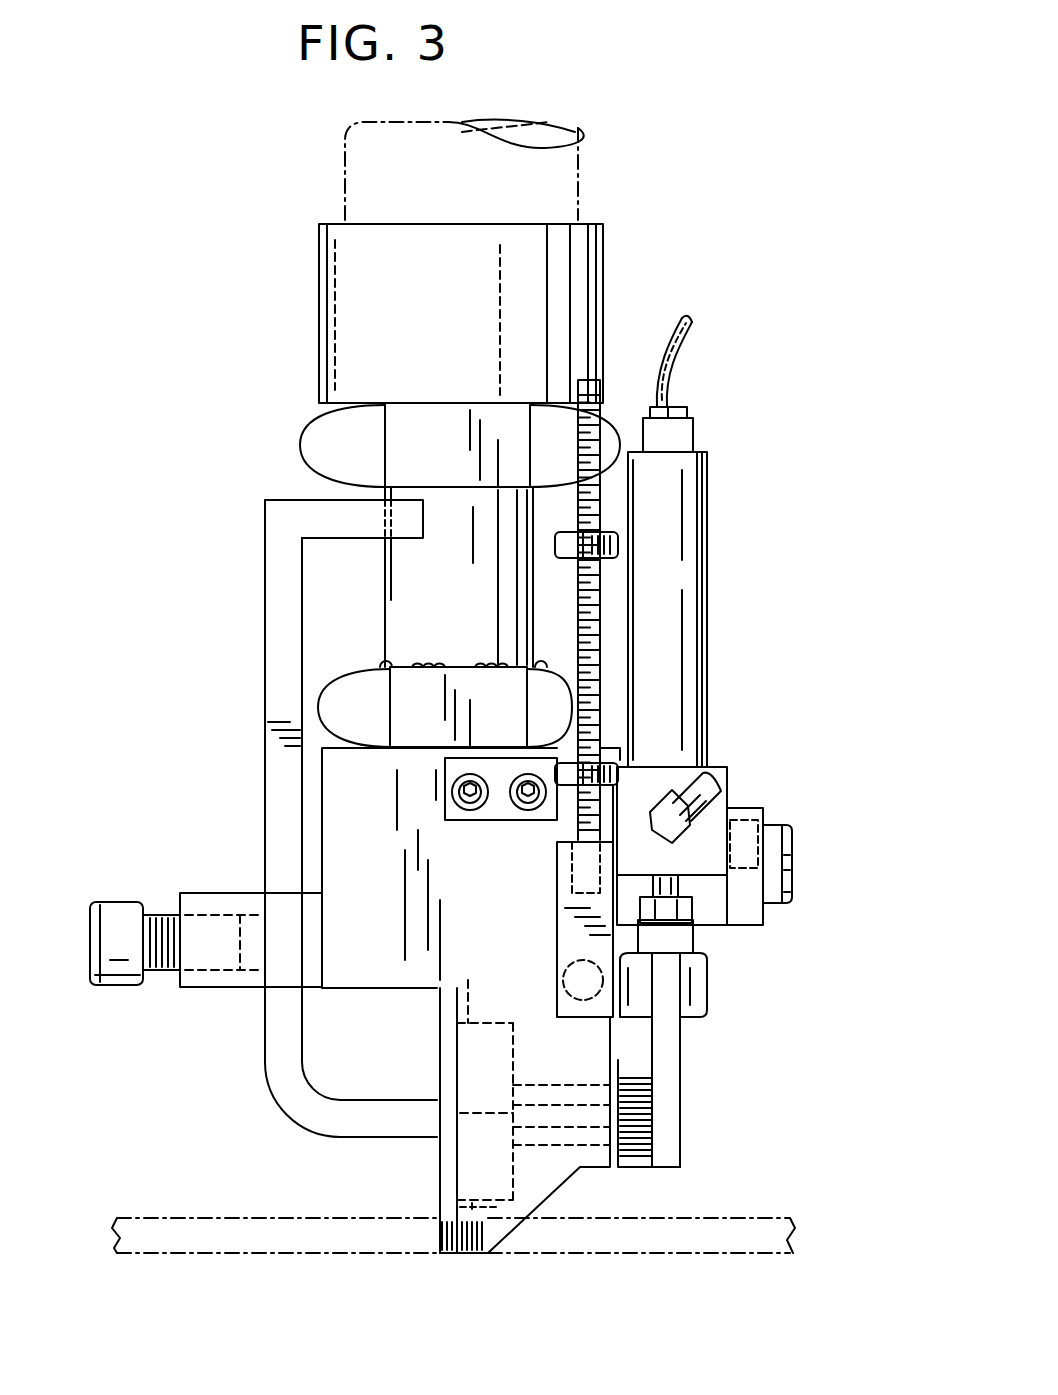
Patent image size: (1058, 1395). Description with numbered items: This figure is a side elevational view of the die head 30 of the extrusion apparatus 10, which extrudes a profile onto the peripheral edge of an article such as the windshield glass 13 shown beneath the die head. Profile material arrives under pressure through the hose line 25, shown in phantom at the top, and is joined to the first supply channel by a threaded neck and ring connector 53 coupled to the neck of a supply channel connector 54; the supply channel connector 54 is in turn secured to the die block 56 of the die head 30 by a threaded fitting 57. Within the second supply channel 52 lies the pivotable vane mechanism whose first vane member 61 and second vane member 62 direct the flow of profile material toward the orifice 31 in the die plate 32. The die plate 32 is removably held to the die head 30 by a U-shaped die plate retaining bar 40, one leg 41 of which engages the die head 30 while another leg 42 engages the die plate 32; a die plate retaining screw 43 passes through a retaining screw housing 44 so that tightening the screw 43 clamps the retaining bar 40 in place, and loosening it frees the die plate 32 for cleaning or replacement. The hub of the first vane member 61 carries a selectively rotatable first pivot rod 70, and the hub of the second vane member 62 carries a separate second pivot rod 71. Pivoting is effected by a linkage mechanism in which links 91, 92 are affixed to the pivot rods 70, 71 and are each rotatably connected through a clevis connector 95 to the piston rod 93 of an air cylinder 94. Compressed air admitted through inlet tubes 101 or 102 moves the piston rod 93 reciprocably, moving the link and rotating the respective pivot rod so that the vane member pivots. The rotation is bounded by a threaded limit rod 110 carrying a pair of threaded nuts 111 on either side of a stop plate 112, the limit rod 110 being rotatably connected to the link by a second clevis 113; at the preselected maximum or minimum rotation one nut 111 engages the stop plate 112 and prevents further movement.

The extrusion apparatus 10 is at (184, 738).
The windshield glass 13 is at (230, 1250).
The hose line 25 is at (563, 163).
The die head 30 is at (548, 1185).
The orifice 31 is at (437, 1220).
The die plate 32 is at (441, 1070).
The die plate retaining bar 40 is at (272, 835).
The leg 41 is at (352, 525).
The leg 42 is at (387, 1122).
The die plate retaining screw 43 is at (127, 972).
The retaining screw housing 44 is at (203, 980).
The second supply channel 52 is at (483, 1258).
The threaded neck and ring connector 53 is at (340, 357).
The supply channel connector 54 is at (410, 612).
The die block 56 is at (339, 790).
The threaded fitting 57 is at (334, 701).
The first vane member 61 is at (471, 1048).
The second vane member 62 is at (462, 1166).
The first pivot rod 70 is at (682, 1097).
The second pivot rod 71 is at (682, 1133).
The link 91 is at (670, 1072).
The link 92 is at (663, 1162).
The piston rod 93 is at (683, 887).
The air cylinder 94 is at (687, 585).
The clevis connector 95 is at (680, 940).
The inlet tube 101 is at (675, 362).
The inlet tube 102 is at (710, 786).
The threaded limit rod 110 is at (597, 504).
The threaded nut 111 is at (613, 540).
The stop plate 112 is at (620, 748).
The second clevis 113 is at (567, 907).